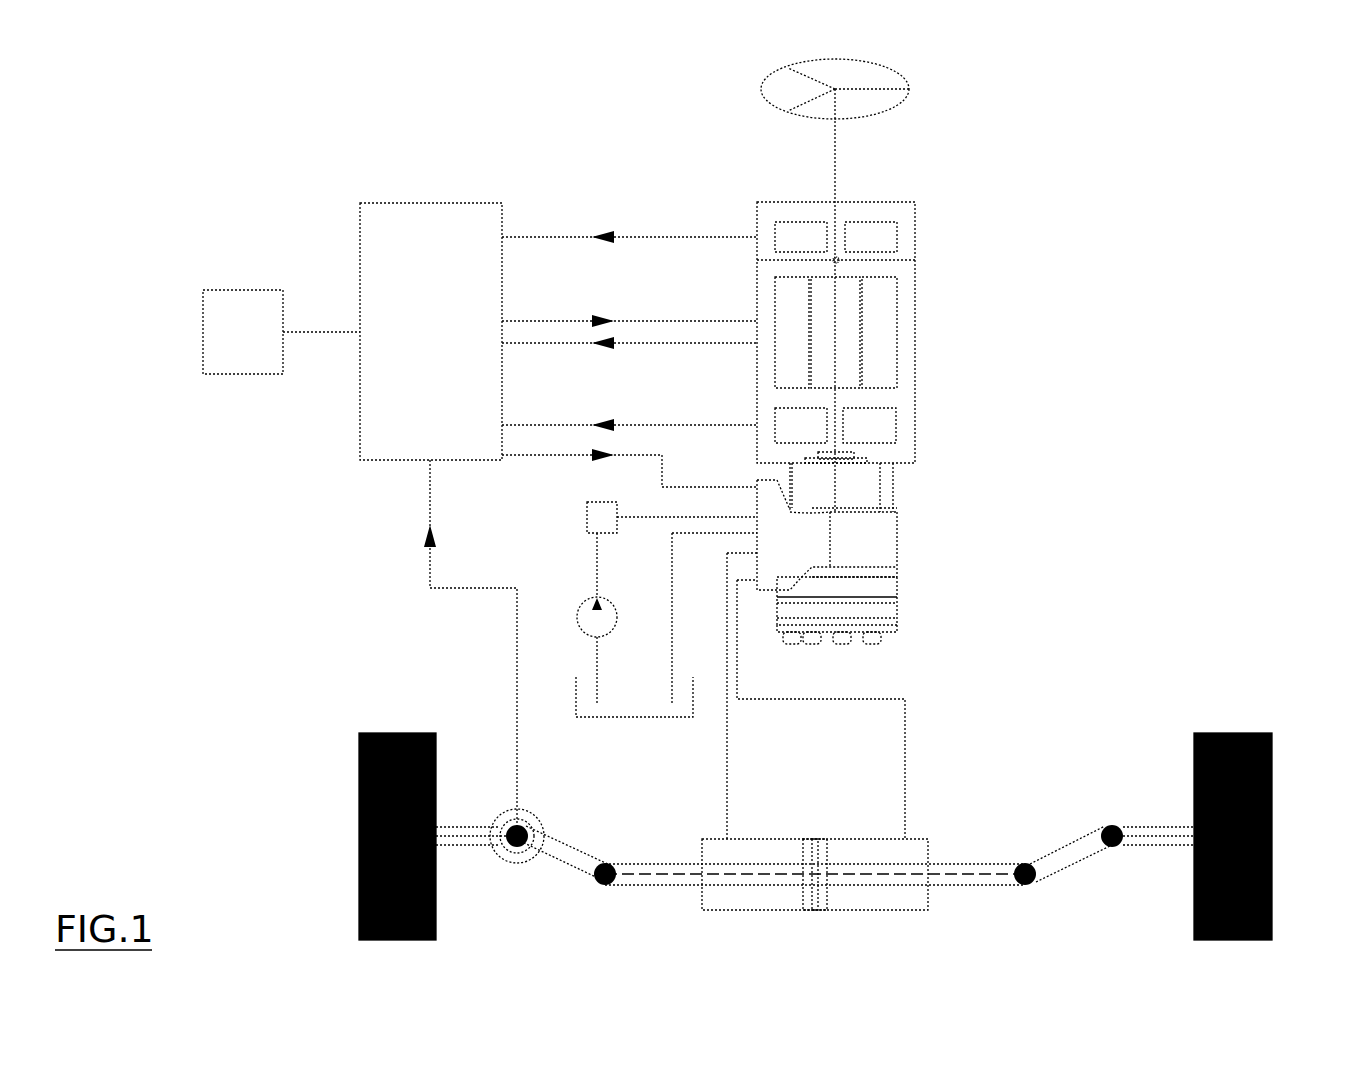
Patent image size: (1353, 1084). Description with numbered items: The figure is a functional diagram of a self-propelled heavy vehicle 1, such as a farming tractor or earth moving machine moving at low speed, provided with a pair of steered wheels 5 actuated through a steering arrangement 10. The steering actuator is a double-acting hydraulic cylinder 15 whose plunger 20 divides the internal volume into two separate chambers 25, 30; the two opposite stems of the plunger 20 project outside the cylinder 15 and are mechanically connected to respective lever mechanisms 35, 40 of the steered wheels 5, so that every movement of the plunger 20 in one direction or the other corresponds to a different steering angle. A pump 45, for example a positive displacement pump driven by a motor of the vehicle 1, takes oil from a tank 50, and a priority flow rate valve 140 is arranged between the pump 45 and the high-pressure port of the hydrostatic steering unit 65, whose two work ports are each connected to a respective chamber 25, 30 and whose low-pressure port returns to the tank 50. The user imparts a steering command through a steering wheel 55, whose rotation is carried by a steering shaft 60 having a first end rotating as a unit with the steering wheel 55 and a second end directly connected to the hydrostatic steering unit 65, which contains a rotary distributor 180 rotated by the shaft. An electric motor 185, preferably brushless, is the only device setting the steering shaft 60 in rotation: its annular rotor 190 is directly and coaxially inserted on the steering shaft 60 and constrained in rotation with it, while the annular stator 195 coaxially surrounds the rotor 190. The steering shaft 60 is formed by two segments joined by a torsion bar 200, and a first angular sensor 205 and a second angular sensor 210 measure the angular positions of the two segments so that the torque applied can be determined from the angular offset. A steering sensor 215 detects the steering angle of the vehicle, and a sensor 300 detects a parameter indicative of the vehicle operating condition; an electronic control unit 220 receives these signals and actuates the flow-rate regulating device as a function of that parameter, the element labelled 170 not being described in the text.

The vehicle 1 is at (135, 100).
The steered wheels 5 is at (366, 786).
The steering arrangement 10 is at (1125, 222).
The double-acting hydraulic cylinder 15 is at (922, 838).
The plunger 20 is at (818, 852).
The chamber 25 is at (737, 898).
The chamber 30 is at (883, 898).
The lever mechanism 35 is at (1078, 861).
The lever mechanism 40 is at (572, 870).
The pump 45 is at (585, 607).
The tank 50 is at (631, 718).
The steering wheel 55 is at (910, 77).
The steering shaft 60 is at (833, 163).
The hydrostatic steering unit 65 is at (912, 585).
The priority flow rate valve 140 is at (597, 522).
The sensor 170 is at (905, 245).
The rotary distributor 180 is at (895, 526).
The electric motor 185 is at (912, 382).
The annular rotor 190 is at (850, 353).
The annular stator 195 is at (880, 331).
The torsion bar 200 is at (915, 261).
The first angular sensor 205 is at (882, 229).
The second angular sensor 210 is at (880, 431).
The steering sensor 215 is at (516, 863).
The electronic control unit 220 is at (412, 222).
The sensor 300 is at (281, 332).